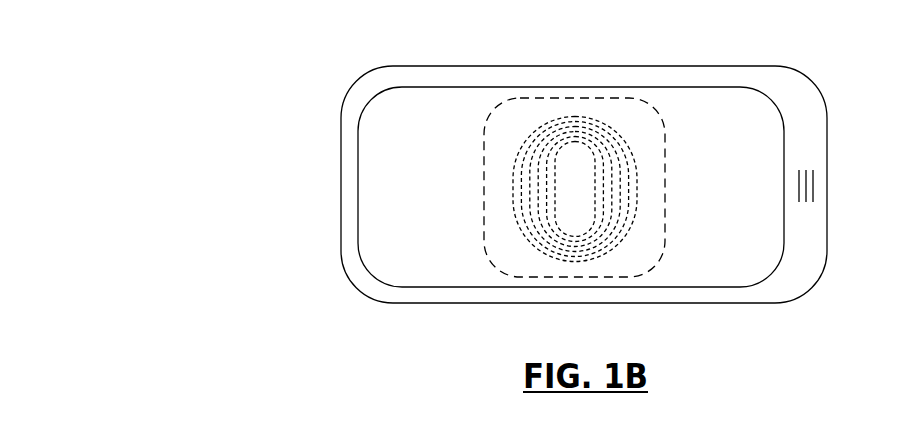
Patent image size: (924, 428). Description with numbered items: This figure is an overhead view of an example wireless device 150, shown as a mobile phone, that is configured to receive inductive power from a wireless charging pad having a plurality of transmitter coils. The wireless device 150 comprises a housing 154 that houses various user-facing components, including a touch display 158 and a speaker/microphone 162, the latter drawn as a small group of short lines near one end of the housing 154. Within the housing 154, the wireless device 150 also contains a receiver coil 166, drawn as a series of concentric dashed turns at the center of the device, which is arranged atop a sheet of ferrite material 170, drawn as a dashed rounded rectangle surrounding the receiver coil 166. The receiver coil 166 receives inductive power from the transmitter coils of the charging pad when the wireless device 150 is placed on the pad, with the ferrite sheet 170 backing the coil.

The wireless device 150 is at (501, 171).
The housing 154 is at (812, 78).
The touch display 158 is at (729, 87).
The speaker/microphone 162 is at (808, 159).
The receiver coil 166 is at (575, 117).
The sheet of ferrite material 170 is at (504, 110).